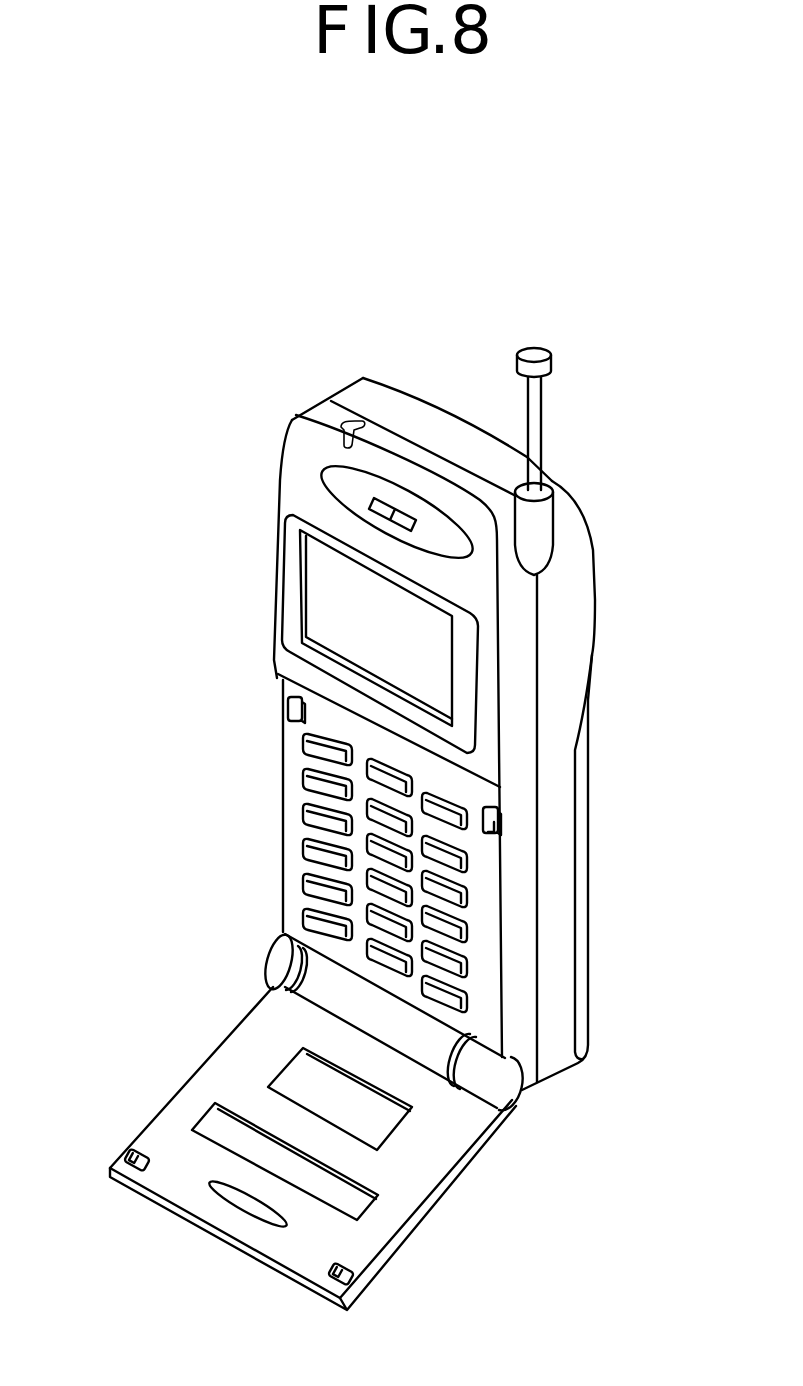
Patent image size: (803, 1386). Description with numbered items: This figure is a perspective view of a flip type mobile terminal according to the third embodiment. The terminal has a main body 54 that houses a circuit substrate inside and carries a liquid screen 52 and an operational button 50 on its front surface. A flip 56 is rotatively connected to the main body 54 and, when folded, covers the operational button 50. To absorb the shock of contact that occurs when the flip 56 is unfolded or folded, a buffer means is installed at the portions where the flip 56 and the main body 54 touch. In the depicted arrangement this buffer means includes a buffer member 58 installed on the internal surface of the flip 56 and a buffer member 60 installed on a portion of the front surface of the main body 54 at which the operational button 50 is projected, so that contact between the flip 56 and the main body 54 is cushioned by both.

The operational button 50 is at (320, 816).
The liquid screen 52 is at (427, 653).
The main body 54 is at (557, 900).
The flip 56 is at (330, 1253).
The buffer member 58 is at (125, 1150).
The buffer member 60 is at (288, 708).